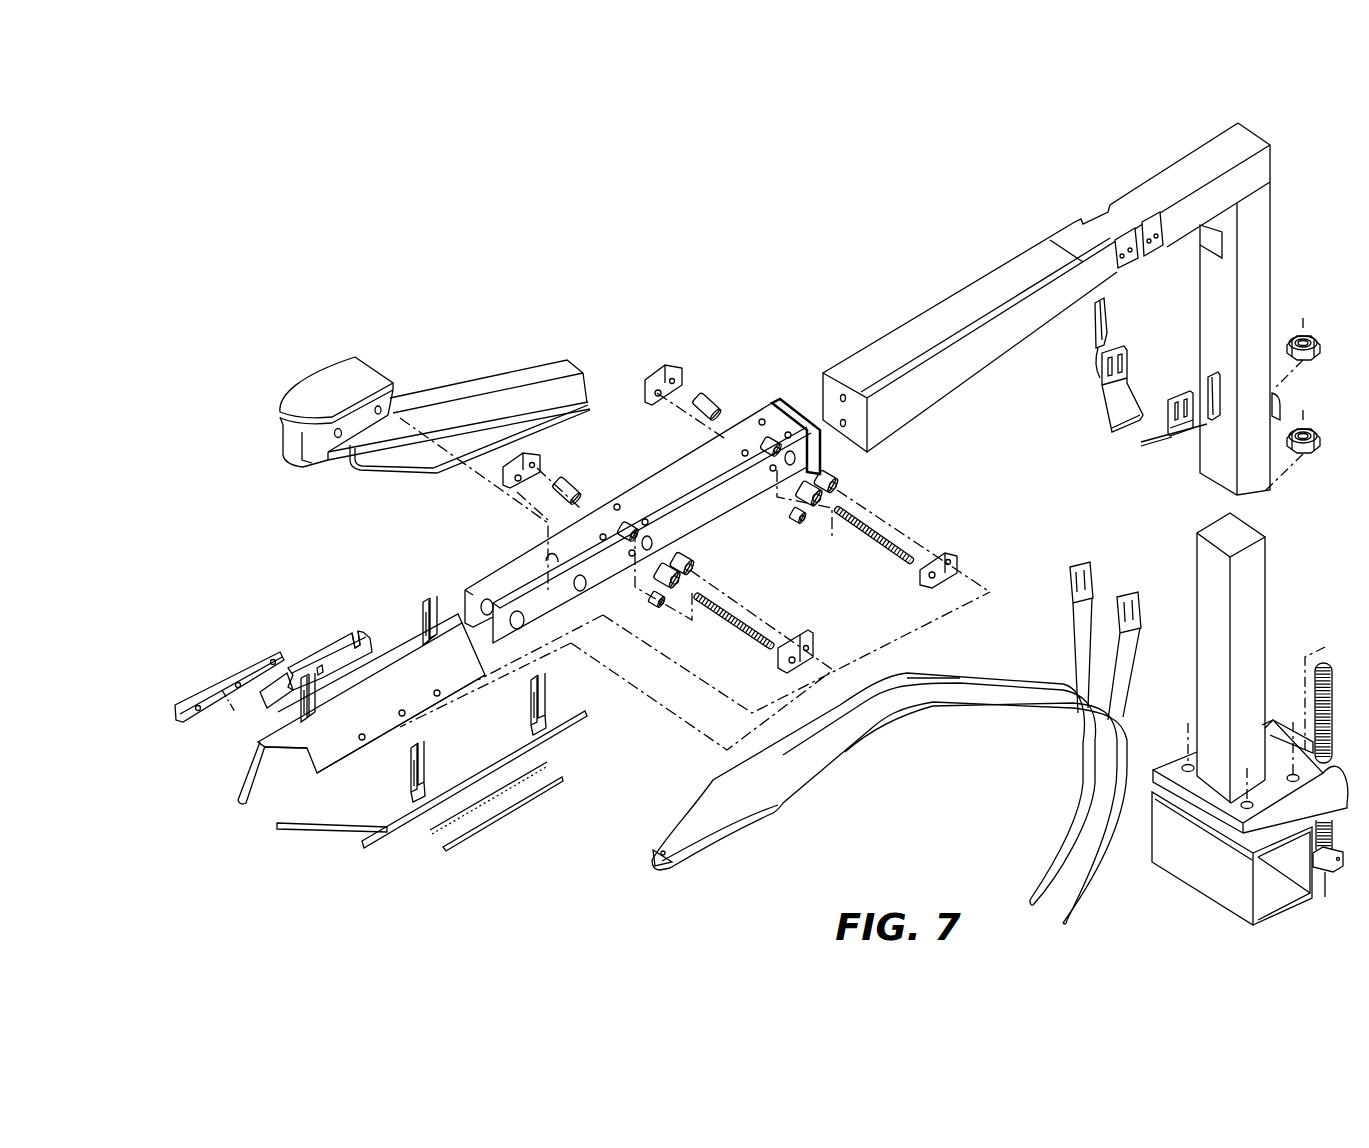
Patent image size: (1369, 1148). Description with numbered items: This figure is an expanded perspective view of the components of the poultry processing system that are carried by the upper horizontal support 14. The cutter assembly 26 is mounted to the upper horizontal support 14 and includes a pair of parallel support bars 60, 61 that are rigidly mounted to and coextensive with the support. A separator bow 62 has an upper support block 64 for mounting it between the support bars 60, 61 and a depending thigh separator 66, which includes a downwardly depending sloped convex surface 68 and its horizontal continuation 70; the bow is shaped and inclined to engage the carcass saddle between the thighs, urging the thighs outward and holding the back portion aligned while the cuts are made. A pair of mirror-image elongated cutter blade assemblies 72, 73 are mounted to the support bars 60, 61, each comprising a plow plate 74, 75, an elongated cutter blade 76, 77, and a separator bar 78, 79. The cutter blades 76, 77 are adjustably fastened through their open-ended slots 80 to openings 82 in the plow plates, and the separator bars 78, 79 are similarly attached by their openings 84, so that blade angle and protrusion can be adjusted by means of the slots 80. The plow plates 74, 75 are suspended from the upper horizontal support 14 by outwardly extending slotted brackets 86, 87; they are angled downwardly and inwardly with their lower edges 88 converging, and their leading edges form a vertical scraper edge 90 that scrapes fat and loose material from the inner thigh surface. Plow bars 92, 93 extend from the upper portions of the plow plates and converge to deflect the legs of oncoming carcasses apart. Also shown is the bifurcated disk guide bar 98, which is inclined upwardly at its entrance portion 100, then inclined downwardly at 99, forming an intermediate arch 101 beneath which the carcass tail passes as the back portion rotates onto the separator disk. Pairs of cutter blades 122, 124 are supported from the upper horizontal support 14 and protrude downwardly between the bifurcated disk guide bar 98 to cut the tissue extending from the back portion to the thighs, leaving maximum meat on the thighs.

The upper horizontal support 14 is at (1158, 192).
The cutter assembly 26 is at (366, 746).
The support bar 60 is at (672, 463).
The support bar 61 is at (720, 503).
The separator bow 62 is at (399, 415).
The upper support block 64 is at (365, 375).
The thigh separator 66 is at (340, 470).
The sloped convex surface 68 is at (360, 475).
The horizontal continuation 70 is at (555, 428).
The elongated cutter blade assembly 72 is at (335, 705).
The elongated cutter blade assembly 73 is at (420, 820).
The plow plate 74 is at (355, 750).
The plow plate 75 is at (392, 820).
The elongated cutter blade 76 is at (325, 655).
The elongated cutter blade 77 is at (547, 763).
The separator bar 78 is at (232, 665).
The separator bar 79 is at (515, 805).
The open-ended slot 80 is at (354, 633).
The opening 82 is at (434, 690).
The opening 84 is at (273, 658).
The slotted bracket 86 is at (425, 614).
The slotted bracket 87 is at (421, 765).
The lower edge 88 is at (460, 695).
The vertical scraper edge 90 is at (308, 762).
The plow bar 92 is at (238, 794).
The plow bar 93 is at (285, 830).
The disk guide bar 98 is at (889, 798).
The downwardly inclined portion 99 is at (1085, 755).
The entrance portion 100 is at (722, 847).
The intermediate arch 101 is at (900, 715).
The cutter blade 122 is at (1105, 412).
The cutter blade 124 is at (1165, 440).